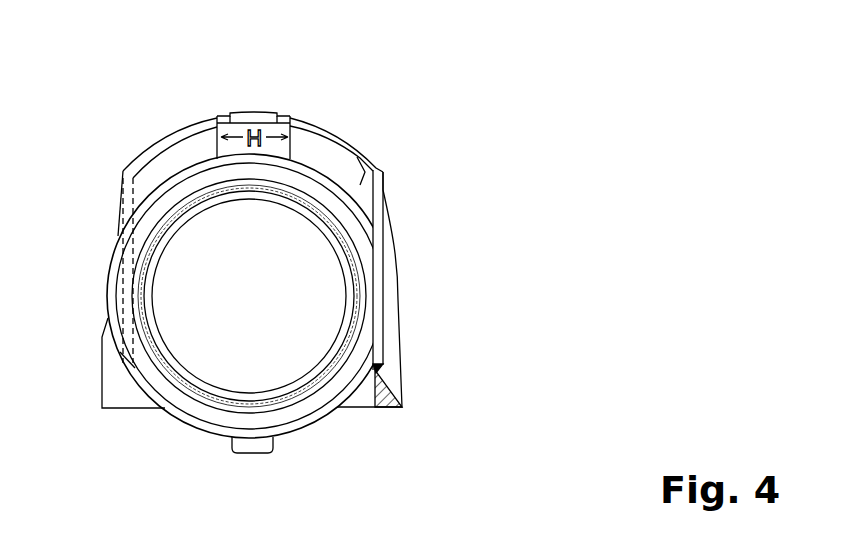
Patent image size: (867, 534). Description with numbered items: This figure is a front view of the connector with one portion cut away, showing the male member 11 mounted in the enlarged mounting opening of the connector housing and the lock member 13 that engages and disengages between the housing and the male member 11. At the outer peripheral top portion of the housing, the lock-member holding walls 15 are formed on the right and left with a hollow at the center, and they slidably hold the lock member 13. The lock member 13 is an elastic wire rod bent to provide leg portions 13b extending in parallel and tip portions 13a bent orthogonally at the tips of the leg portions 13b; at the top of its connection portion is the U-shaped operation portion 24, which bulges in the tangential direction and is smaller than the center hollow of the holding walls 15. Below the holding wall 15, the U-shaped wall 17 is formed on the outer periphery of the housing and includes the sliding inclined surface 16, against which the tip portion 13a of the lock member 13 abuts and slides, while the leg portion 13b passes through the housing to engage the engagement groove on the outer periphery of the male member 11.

The male member 11 is at (202, 412).
The lock member 13 is at (355, 148).
The tip portion 13a is at (380, 363).
The leg portion 13b is at (380, 228).
The lock-member holding wall 15 is at (204, 131).
The sliding inclined surface 16 is at (380, 380).
The U-shaped wall 17 is at (110, 382).
The operation portion 24 is at (253, 113).